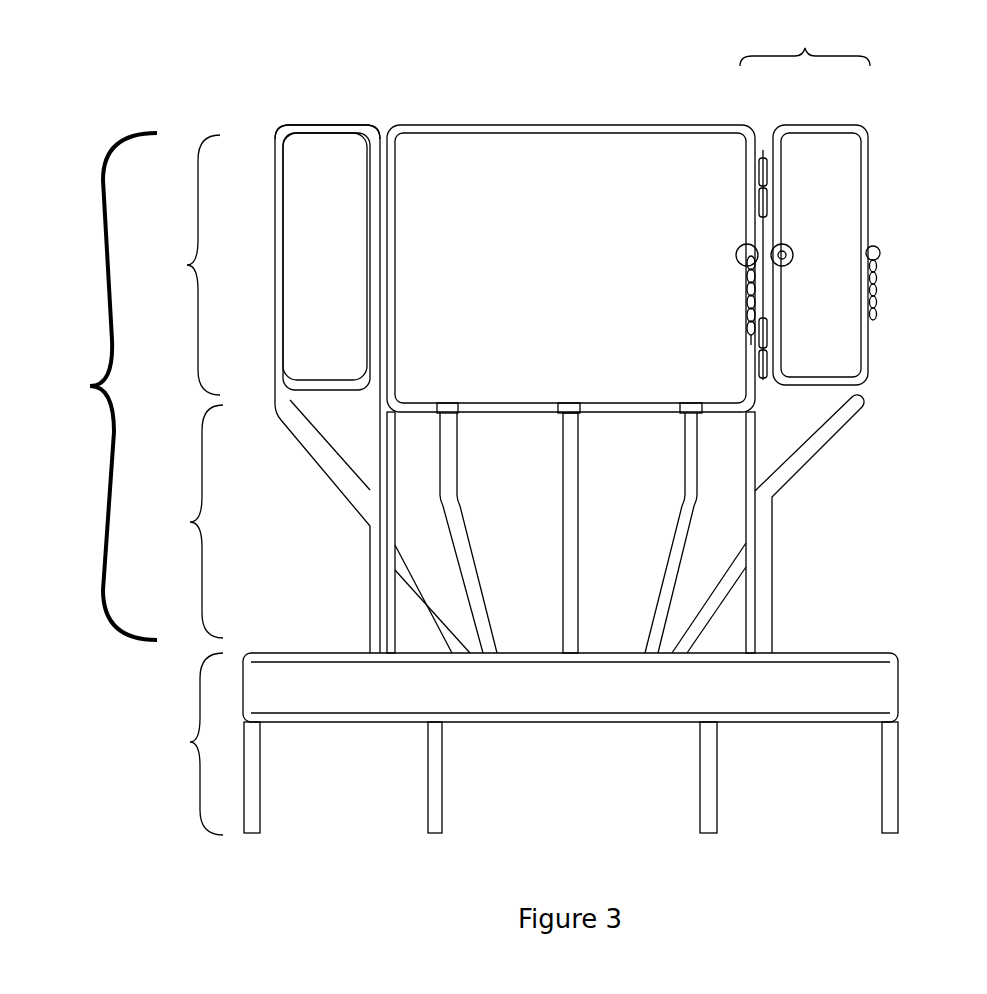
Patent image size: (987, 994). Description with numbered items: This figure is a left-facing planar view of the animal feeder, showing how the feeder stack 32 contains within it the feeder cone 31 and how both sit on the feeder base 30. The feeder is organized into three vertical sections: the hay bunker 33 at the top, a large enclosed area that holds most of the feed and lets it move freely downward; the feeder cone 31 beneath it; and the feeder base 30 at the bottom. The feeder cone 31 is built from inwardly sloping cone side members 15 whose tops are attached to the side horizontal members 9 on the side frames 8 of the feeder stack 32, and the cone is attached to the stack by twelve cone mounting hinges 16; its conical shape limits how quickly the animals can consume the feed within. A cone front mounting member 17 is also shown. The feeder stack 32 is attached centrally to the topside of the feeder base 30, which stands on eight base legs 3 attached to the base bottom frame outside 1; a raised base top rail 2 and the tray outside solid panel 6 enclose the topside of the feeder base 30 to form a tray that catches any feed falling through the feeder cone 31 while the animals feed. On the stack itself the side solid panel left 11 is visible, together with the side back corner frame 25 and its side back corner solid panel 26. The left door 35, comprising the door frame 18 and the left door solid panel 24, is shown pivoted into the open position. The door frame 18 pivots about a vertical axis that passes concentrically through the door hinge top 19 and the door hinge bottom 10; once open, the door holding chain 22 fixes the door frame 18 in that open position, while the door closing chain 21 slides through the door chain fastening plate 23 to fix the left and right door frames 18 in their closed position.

The base bottom frame outside 1 is at (878, 718).
The base top rail 2 is at (887, 657).
The base legs 3 is at (253, 785).
The tray outside solid panel 6 is at (872, 683).
The side frame 8 is at (542, 132).
The side horizontal member 9 is at (503, 408).
The door hinge bottom 10 is at (763, 198).
The side solid panel left 11 is at (485, 178).
The cone side members 15 is at (357, 502).
The cone mounting hinges 16 is at (438, 408).
The cone front mounting member 17 is at (820, 437).
The door frame 18 is at (763, 165).
The door hinge top 19 is at (761, 158).
The door closing chain 21 is at (877, 275).
The door holding chain 22 is at (752, 253).
The door chain fastening plate 23 is at (792, 248).
The door solid panel 24 is at (822, 140).
The side back corner frame 25 is at (328, 128).
The side back corner solid panel 26 is at (340, 153).
The feeder base 30 is at (192, 744).
The feeder cone 31 is at (191, 521).
The feeder stack 32 is at (100, 386).
The hay bunker 33 is at (187, 265).
The left door 35 is at (805, 41).